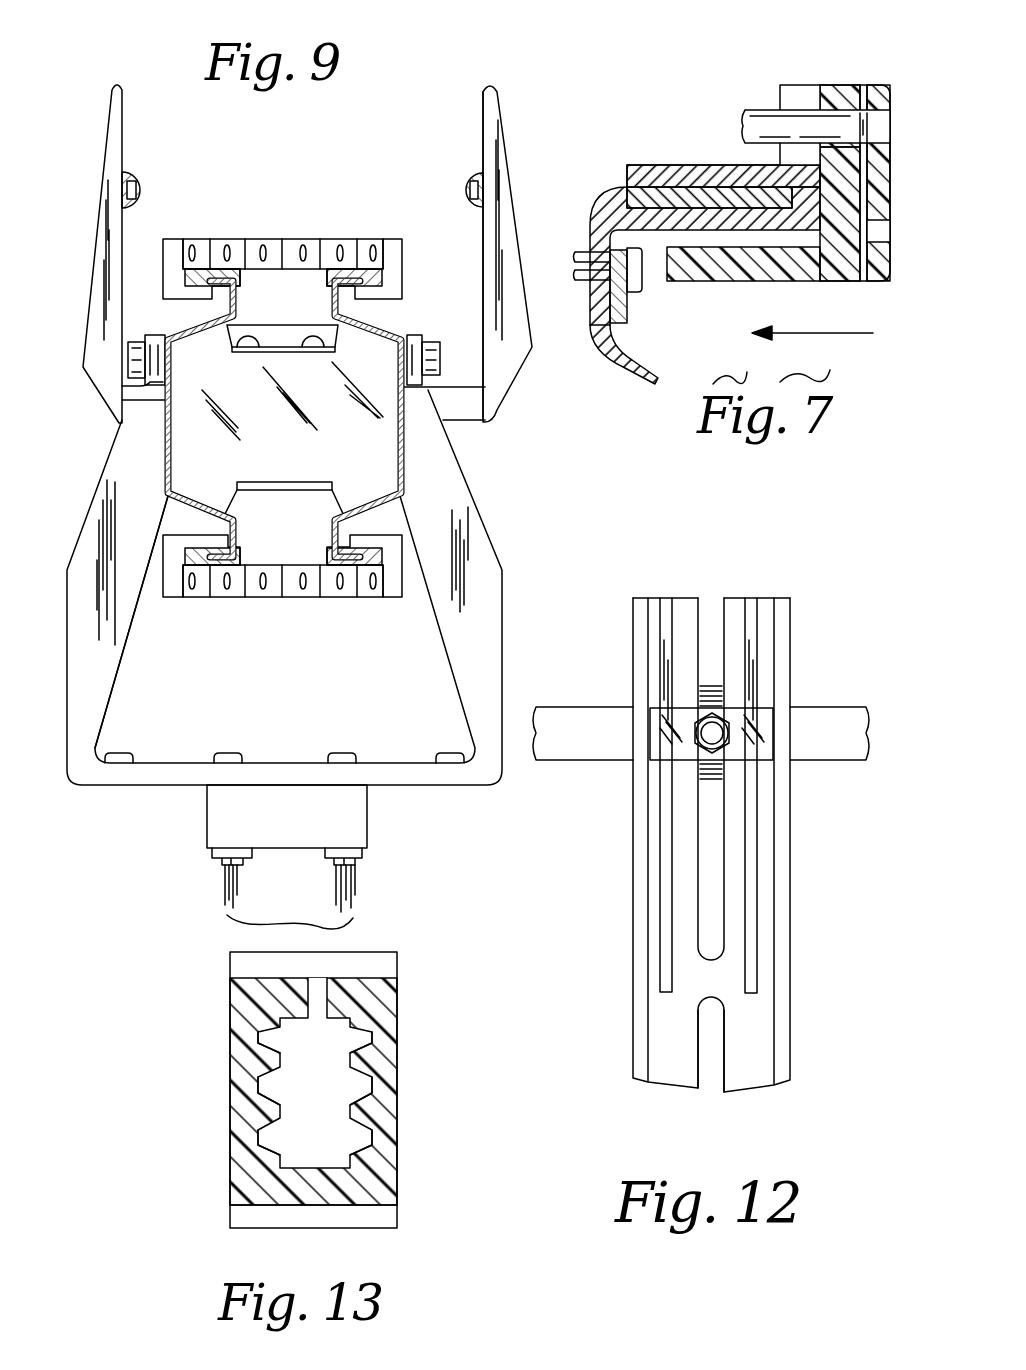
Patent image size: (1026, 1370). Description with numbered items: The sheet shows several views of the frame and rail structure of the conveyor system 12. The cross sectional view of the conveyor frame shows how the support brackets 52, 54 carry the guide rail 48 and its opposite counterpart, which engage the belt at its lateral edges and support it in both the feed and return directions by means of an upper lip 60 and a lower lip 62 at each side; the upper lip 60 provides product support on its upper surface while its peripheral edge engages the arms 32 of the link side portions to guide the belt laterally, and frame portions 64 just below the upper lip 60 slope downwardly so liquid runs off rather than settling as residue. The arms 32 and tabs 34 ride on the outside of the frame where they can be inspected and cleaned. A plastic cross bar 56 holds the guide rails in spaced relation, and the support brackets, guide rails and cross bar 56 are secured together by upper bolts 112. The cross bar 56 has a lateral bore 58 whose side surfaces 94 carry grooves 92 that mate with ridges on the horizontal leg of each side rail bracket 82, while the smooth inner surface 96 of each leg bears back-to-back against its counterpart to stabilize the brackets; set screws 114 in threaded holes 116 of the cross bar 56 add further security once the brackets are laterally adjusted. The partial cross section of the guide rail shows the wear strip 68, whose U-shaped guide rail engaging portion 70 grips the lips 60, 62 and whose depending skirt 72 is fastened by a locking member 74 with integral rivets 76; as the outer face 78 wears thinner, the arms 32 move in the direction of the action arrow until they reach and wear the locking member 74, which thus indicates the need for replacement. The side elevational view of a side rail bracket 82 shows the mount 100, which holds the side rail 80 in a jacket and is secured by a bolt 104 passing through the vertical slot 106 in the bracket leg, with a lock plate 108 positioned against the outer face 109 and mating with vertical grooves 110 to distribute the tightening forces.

In FIG. 9, the conveyor system 12 is at (357, 162).
In FIG. 7, the arms 32 is at (848, 222).
In FIG. 9, the tabs 34 is at (165, 513).
In FIG. 7, the tabs 34 is at (795, 258).
In FIG. 9, the guide rail 48 is at (163, 400).
In FIG. 9, the support bracket 52 is at (125, 477).
In FIG. 9, the support bracket 54 is at (445, 547).
In FIG. 9, the cross bar 56 is at (340, 430).
In FIG. 13, the cross bar 56 is at (377, 1153).
In FIG. 13, the lateral bore 58 is at (323, 1048).
In FIG. 9, the upper lip 60 is at (336, 279).
In FIG. 7, the upper lip 60 is at (735, 190).
In FIG. 9, the lower lip 62 is at (352, 550).
In FIG. 9, the frame portions 64 is at (378, 326).
In FIG. 7, the wear strip 68 is at (665, 82).
In FIG. 7, the guide rail engaging portion 70 is at (686, 172).
In FIG. 7, the depending skirt 72 is at (612, 245).
In FIG. 7, the locking member 74 is at (637, 272).
In FIG. 7, the rivets 76 is at (588, 276).
In FIG. 7, the outer face 78 is at (818, 183).
In FIG. 9, the side rail 80 is at (150, 190).
In FIG. 9, the side rail bracket 82 is at (493, 170).
In FIG. 12, the side rail bracket 82 is at (800, 596).
In FIG. 13, the grooves 92 is at (270, 1137).
In FIG. 13, the side surfaces 94 is at (343, 1083).
In FIG. 9, the inner surface 96 is at (456, 414).
In FIG. 9, the mount 100 is at (475, 172).
In FIG. 12, the bolt 104 is at (712, 733).
In FIG. 12, the vertical slot 106 is at (707, 650).
In FIG. 12, the lock plate 108 is at (658, 747).
In FIG. 12, the outer face 109 is at (708, 977).
In FIG. 12, the vertical grooves 110 is at (760, 612).
In FIG. 9, the upper bolts 112 is at (440, 362).
In FIG. 9, the set screws 114 is at (228, 324).
In FIG. 13, the threaded holes 116 is at (313, 988).